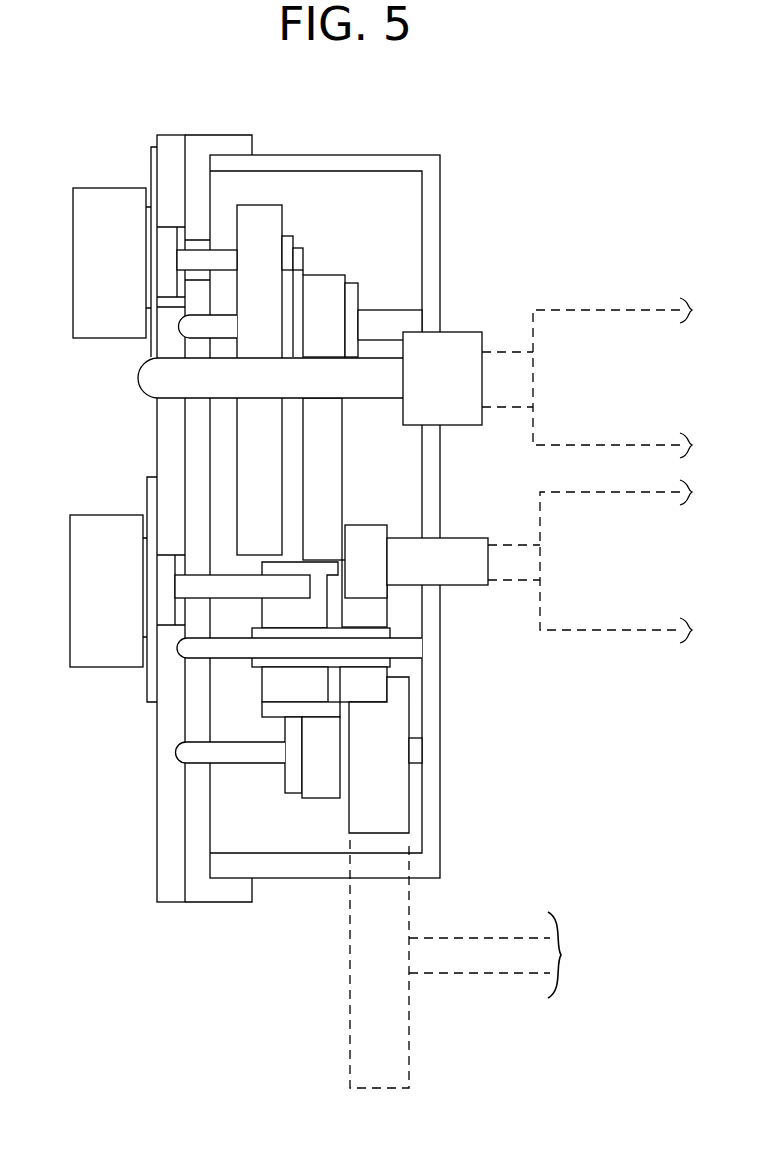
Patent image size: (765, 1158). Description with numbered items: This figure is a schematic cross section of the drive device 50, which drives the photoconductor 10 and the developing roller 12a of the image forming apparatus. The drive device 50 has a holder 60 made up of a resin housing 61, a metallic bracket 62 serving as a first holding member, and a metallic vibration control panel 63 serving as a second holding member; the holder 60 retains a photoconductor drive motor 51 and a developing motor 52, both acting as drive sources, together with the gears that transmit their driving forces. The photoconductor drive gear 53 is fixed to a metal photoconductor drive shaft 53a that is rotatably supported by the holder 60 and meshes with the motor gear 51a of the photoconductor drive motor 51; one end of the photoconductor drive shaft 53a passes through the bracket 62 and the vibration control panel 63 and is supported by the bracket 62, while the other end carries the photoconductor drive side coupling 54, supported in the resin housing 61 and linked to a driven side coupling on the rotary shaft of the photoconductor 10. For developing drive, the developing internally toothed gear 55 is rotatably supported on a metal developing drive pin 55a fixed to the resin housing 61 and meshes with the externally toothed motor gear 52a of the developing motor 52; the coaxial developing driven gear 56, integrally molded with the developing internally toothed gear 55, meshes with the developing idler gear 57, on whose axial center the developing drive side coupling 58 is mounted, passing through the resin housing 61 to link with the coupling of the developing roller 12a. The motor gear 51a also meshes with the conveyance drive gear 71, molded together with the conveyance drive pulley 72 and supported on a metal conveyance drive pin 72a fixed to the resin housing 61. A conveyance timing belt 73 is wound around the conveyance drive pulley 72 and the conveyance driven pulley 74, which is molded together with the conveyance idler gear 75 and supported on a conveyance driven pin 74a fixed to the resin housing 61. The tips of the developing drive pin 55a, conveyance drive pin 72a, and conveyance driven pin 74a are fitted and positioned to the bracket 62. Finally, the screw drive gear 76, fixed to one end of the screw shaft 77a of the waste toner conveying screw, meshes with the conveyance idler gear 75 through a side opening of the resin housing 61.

The drive device 50 is at (452, 148).
The photoconductor 10 is at (606, 310).
The developing roller 12a is at (618, 632).
The photoconductor drive motor 51 is at (73, 262).
The motor gear 51a is at (303, 258).
The developing motor 52 is at (70, 585).
The motor gear 52a is at (232, 582).
The photoconductor drive gear 53 is at (262, 205).
The photoconductor drive shaft 53a is at (138, 378).
The photoconductor drive side coupling 54 is at (452, 332).
The developing internally toothed gear 55 is at (262, 685).
The developing drive pin 55a is at (410, 650).
The developing driven gear 56 is at (388, 612).
The developing idler gear 57 is at (364, 525).
The developing drive side coupling 58 is at (457, 538).
The holder 60 is at (269, 1003).
The resin housing 61 is at (284, 879).
The bracket 62 is at (224, 903).
The vibration control panel 63 is at (171, 903).
The conveyance drive gear 71 is at (288, 236).
The conveyance drive pulley 72 is at (350, 283).
The conveyance drive pin 72a is at (372, 311).
The conveyance timing belt 73 is at (343, 445).
The conveyance driven pulley 74 is at (285, 781).
The conveyance driven pin 74a is at (175, 750).
The conveyance idler gear 75 is at (410, 803).
The screw drive gear 76 is at (410, 1037).
The screw shaft 77a is at (487, 937).